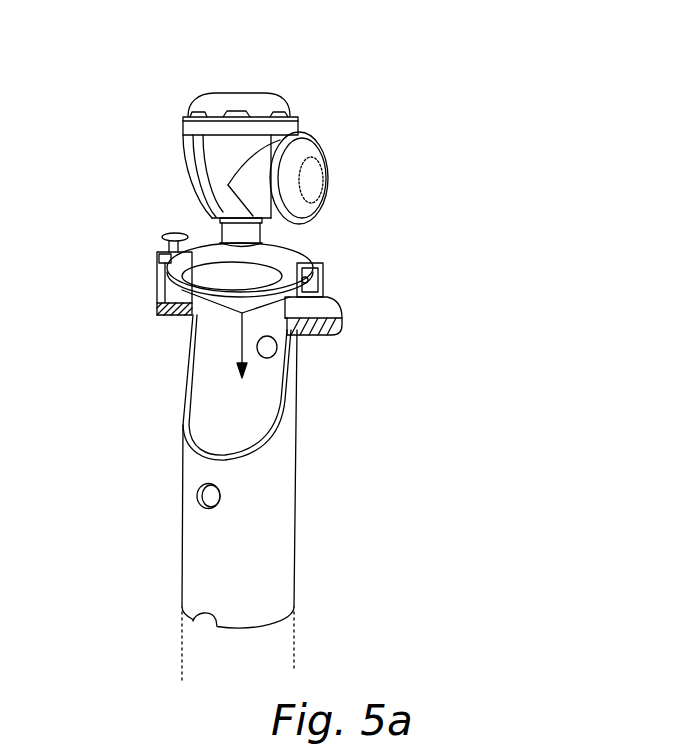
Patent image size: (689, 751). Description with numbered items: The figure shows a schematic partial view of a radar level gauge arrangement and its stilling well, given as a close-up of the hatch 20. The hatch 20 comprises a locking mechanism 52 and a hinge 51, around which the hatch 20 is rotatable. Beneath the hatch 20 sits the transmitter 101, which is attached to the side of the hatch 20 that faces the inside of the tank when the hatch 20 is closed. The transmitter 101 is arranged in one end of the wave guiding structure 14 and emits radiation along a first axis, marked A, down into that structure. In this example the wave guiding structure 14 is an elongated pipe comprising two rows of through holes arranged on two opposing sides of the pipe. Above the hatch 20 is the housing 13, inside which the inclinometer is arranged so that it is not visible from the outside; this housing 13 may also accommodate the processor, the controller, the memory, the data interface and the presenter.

The housing 13 is at (177, 60).
The hatch 20 is at (330, 236).
The locking mechanism 52 is at (150, 230).
The hinge 51 is at (325, 274).
The transmitter 101 is at (193, 321).
The wave guiding structure 14 is at (271, 495).